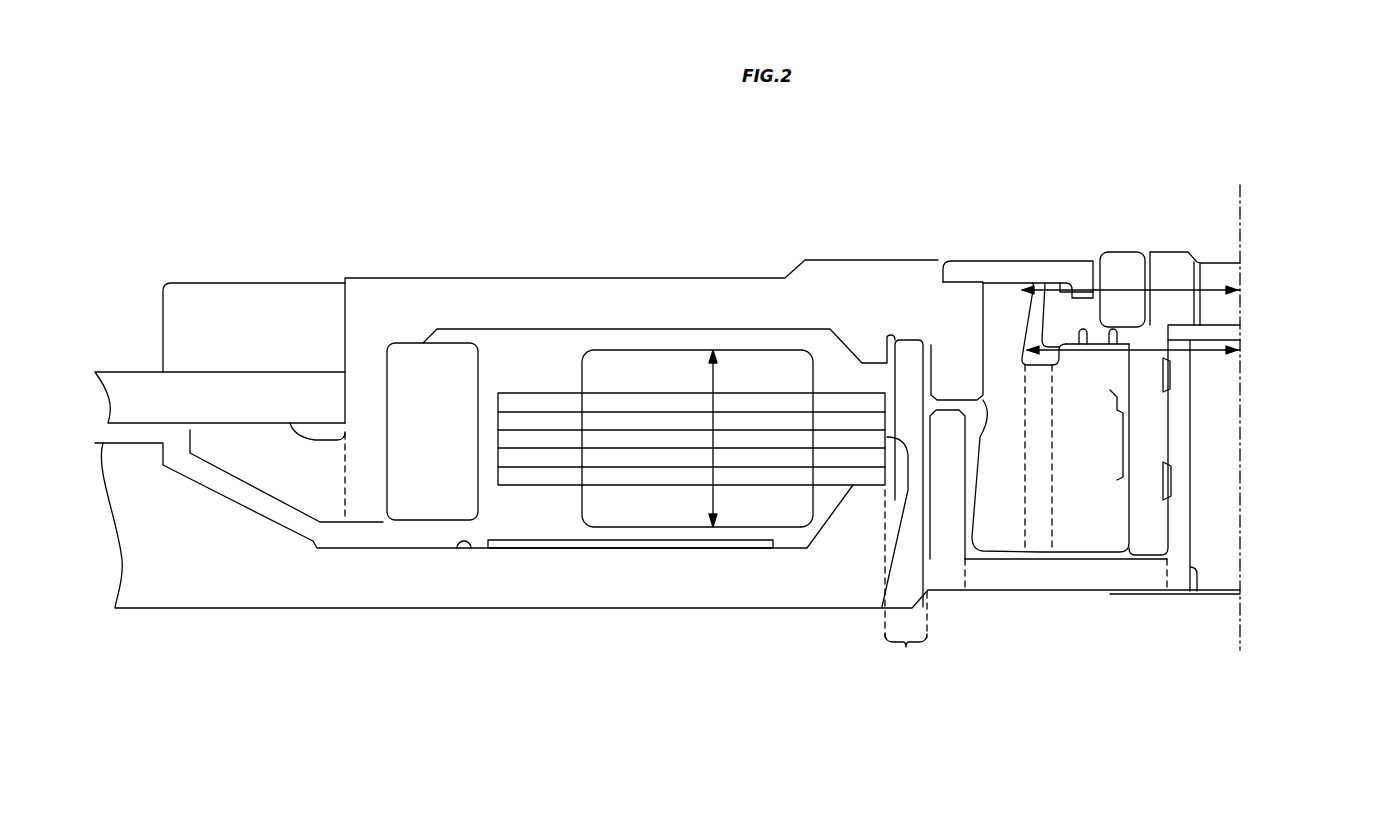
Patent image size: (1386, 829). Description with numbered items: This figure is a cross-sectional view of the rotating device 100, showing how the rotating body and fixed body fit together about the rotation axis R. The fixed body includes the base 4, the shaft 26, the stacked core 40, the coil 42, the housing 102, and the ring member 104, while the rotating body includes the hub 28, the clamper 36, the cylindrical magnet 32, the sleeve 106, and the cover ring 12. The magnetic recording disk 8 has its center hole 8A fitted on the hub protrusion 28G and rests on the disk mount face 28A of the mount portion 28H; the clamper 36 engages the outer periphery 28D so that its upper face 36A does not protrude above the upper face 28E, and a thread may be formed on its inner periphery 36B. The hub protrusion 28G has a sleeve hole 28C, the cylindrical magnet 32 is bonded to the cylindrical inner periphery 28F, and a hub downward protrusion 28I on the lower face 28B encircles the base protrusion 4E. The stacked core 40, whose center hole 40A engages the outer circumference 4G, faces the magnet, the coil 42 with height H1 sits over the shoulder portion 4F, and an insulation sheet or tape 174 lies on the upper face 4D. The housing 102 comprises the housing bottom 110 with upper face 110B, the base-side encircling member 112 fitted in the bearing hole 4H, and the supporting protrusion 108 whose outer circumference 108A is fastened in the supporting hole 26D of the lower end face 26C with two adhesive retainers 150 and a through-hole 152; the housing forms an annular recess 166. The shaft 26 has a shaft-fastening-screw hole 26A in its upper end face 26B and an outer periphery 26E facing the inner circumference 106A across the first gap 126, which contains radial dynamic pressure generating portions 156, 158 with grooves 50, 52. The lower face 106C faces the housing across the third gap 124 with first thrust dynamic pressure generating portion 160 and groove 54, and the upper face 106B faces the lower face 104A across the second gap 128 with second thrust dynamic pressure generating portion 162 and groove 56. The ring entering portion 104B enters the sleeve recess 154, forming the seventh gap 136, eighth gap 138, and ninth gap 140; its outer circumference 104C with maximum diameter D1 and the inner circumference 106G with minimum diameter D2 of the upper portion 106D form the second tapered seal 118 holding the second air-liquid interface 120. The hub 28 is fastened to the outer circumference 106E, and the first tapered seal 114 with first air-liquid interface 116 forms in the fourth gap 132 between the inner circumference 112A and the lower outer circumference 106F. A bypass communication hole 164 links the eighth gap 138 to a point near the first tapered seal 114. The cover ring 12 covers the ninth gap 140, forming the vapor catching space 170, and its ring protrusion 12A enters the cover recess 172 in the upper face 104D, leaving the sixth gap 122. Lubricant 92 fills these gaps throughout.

The base 4 is at (178, 583).
The upper face of the base 4D is at (457, 547).
The base protrusion 4E is at (906, 506).
The shoulder portion 4F is at (838, 528).
The outer circumference of the base protrusion 4G is at (885, 418).
The bearing hole 4H is at (945, 578).
The magnetic recording disk 8 is at (123, 382).
The center hole of the magnetic recording disk 8A is at (345, 397).
The cover ring 12 is at (1037, 272).
The ring protrusion 12A is at (1080, 280).
The shaft 26 is at (1177, 308).
The shaft-fastening-screw hole 26A is at (1210, 273).
The upper end face of the shaft 26B is at (1170, 247).
The lower end face of the shaft 26C is at (1148, 552).
The supporting hole 26D is at (1168, 437).
The outer periphery of the middle portion of the shaft 26E is at (1130, 455).
The hub 28 is at (505, 287).
The disk mount face 28A is at (252, 408).
The lower face of the hub 28B is at (662, 333).
The sleeve hole 28C is at (990, 277).
The outer periphery of the hub protrusion 28D is at (345, 308).
The upper face of the hub protrusion 28E is at (615, 277).
The cylindrical inner periphery 28F is at (400, 473).
The hub protrusion 28G is at (555, 287).
The mount portion 28H is at (287, 450).
The hub downward protrusion 28I is at (868, 347).
The cylindrical magnet 32 is at (452, 363).
The clamper 36 is at (197, 300).
The upper face of the clamper 36A is at (247, 280).
The inner periphery of the clamper 36B is at (347, 323).
The stacked core 40 is at (533, 473).
The center hole of the stacked core 40A is at (881, 640).
The coil 42 is at (622, 508).
The first radial dynamic pressure generating groove 50 is at (1125, 395).
The second radial dynamic pressure generating groove 52 is at (1127, 523).
The first thrust dynamic pressure generating groove 54 is at (1082, 557).
The second thrust dynamic pressure generating groove 56 is at (1112, 348).
The lubricant 92 is at (973, 555).
The rotating device 100 is at (712, 789).
The housing 102 is at (1020, 582).
The ring member 104 is at (1130, 263).
The lower face of the ring member 104A is at (1106, 322).
The ring entering portion 104B is at (1005, 337).
The outer circumference of the ring entering portion 104C is at (1012, 282).
The upper face of the ring member 104D is at (1057, 270).
The sleeve 106 is at (990, 547).
The inner circumference of the sleeve 106A is at (1118, 422).
The upper face of the sleeve 106B is at (1062, 362).
The lower face of the sleeve 106C is at (1067, 547).
The upper portion of the sleeve 106D is at (1010, 298).
The outer circumference of the upper part of the sleeve 106E is at (1000, 325).
The lower outer circumference of the sleeve 106F is at (977, 458).
The inner circumference of the upper portion of the sleeve 106G is at (1020, 300).
The supporting protrusion 108 is at (1165, 559).
The outer circumference of the supporting protrusion 108A is at (1153, 552).
The housing bottom 110 is at (1118, 583).
The upper face of the housing bottom 110B is at (1072, 552).
The base-side encircling member 112 is at (935, 520).
The inner circumference of the base-side encircling member 112A is at (967, 442).
The first tapered seal 114 is at (975, 500).
The first air-liquid interface 116 is at (975, 478).
The second tapered seal 118 is at (1000, 315).
The second air-liquid interface 120 is at (1005, 305).
The sixth gap 122 is at (1070, 280).
The third gap 124 is at (1107, 642).
The first gap 126 is at (1123, 433).
The second gap 128 is at (1132, 251).
The fourth gap 132 is at (973, 470).
The seventh gap 136 is at (1082, 280).
The eighth gap 138 is at (1010, 345).
The ninth gap 140 is at (1012, 287).
The adhesive retainer 150 is at (1170, 378).
The through-hole 152 is at (1190, 582).
The sleeve recess 154 is at (1058, 368).
The first radial dynamic pressure generating portion 156 is at (1130, 370).
The second radial dynamic pressure generating portion 158 is at (1130, 512).
The first thrust dynamic pressure generating portion 160 is at (1085, 552).
The second thrust dynamic pressure generating portion 162 is at (1112, 327).
The bypass communication hole 164 is at (1047, 517).
The annular recess 166 is at (997, 545).
The vapor catching space 170 is at (1012, 290).
The cover recess 172 is at (1100, 267).
The insulation sheet or tape 174 is at (590, 543).
The height of the coil H1 is at (713, 502).
The maximum diameter of the outer circumference of the ring entering portion D1 is at (1215, 353).
The minimum diameter of the inner circumference of the upper portion D2 is at (1220, 285).
The rotation axis R is at (1240, 404).